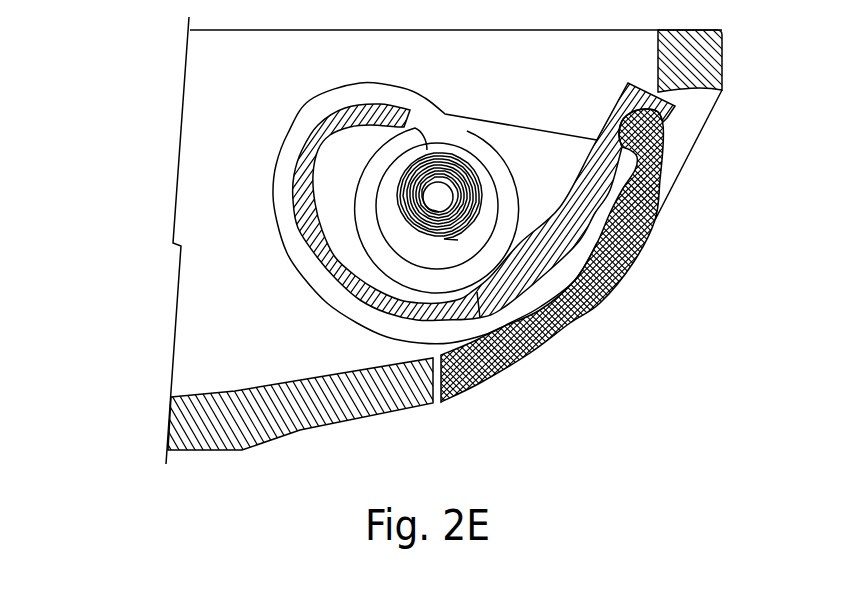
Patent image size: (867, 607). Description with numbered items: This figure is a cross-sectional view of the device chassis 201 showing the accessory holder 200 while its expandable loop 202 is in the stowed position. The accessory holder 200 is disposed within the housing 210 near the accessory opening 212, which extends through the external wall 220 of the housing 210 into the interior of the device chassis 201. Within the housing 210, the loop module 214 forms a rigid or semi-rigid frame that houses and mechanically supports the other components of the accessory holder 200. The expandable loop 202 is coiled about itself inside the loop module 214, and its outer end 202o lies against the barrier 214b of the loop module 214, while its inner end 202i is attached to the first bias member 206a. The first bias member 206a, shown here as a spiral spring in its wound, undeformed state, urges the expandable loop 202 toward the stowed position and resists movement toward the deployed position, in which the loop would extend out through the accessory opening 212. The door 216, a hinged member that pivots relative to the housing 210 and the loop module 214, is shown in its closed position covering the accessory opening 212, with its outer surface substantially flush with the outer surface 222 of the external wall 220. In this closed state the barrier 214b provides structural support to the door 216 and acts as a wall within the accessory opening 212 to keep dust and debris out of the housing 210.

The accessory holder 200 is at (316, 306).
The device chassis 201 is at (120, 92).
The expandable loop 202 is at (283, 201).
The inner end of the expandable loop 202i is at (428, 148).
The outer end of the expandable loop 202o is at (617, 183).
The first bias member 206a is at (402, 188).
The housing 210 is at (190, 320).
The accessory opening 212 is at (698, 120).
The loop module 214 is at (330, 188).
The barrier 214b is at (575, 207).
The door 216 is at (577, 303).
The external wall 220 is at (393, 400).
The outer surface 222 is at (300, 430).